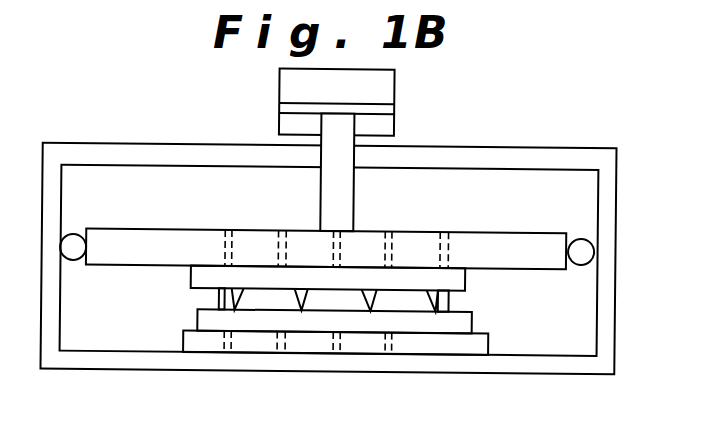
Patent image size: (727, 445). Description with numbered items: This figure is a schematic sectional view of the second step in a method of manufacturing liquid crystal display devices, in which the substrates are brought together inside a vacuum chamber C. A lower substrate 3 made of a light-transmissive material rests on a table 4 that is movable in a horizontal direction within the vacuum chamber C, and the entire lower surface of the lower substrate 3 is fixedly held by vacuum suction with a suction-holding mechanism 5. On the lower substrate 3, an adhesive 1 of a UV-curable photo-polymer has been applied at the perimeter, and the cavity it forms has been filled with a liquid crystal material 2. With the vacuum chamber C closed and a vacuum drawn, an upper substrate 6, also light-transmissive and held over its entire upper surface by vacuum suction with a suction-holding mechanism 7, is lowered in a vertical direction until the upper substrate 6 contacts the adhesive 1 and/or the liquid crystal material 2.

The adhesive 1 is at (445, 302).
The liquid crystal material 2 is at (403, 298).
The lower substrate 3 is at (471, 328).
The table 4 is at (211, 341).
The suction-holding mechanism 5 is at (278, 340).
The upper substrate 6 is at (453, 279).
The suction-holding mechanism 7 is at (397, 250).
The vacuum chamber C is at (597, 361).